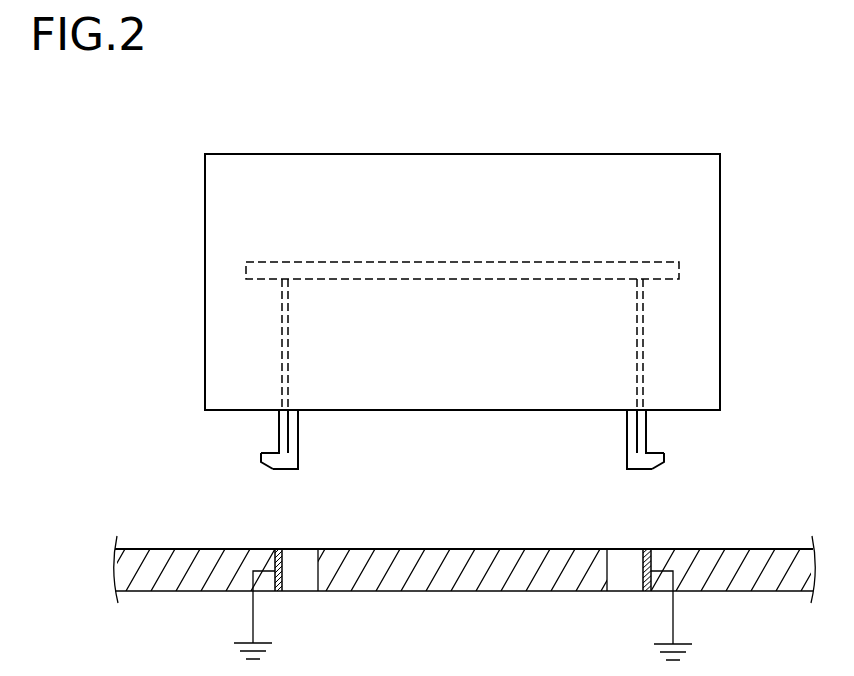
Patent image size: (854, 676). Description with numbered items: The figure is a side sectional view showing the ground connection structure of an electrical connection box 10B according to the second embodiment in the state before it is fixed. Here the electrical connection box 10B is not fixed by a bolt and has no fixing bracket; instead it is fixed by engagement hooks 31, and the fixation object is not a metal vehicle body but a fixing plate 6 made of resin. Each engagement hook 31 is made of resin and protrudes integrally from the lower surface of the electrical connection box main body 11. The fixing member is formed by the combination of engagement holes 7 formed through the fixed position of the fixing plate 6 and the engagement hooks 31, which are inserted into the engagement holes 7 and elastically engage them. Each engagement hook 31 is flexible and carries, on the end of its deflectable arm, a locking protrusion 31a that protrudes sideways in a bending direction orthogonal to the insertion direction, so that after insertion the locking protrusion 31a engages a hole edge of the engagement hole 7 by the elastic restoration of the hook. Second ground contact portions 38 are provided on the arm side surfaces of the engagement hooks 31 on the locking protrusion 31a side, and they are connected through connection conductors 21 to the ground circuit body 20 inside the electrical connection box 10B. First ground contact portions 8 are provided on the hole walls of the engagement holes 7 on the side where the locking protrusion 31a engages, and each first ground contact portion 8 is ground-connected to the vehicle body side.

The electrical connection box 10B is at (668, 152).
The electrical connection box main body 11 is at (607, 175).
The ground circuit body 20 is at (503, 262).
The connection conductor 21 is at (290, 349).
The engagement hook 31 is at (298, 440).
The locking protrusion 31a is at (268, 468).
The second ground contact portion 38 is at (285, 432).
The fixing plate 6 is at (452, 592).
The engagement hole 7 is at (300, 578).
The first ground contact portion 8 is at (279, 565).